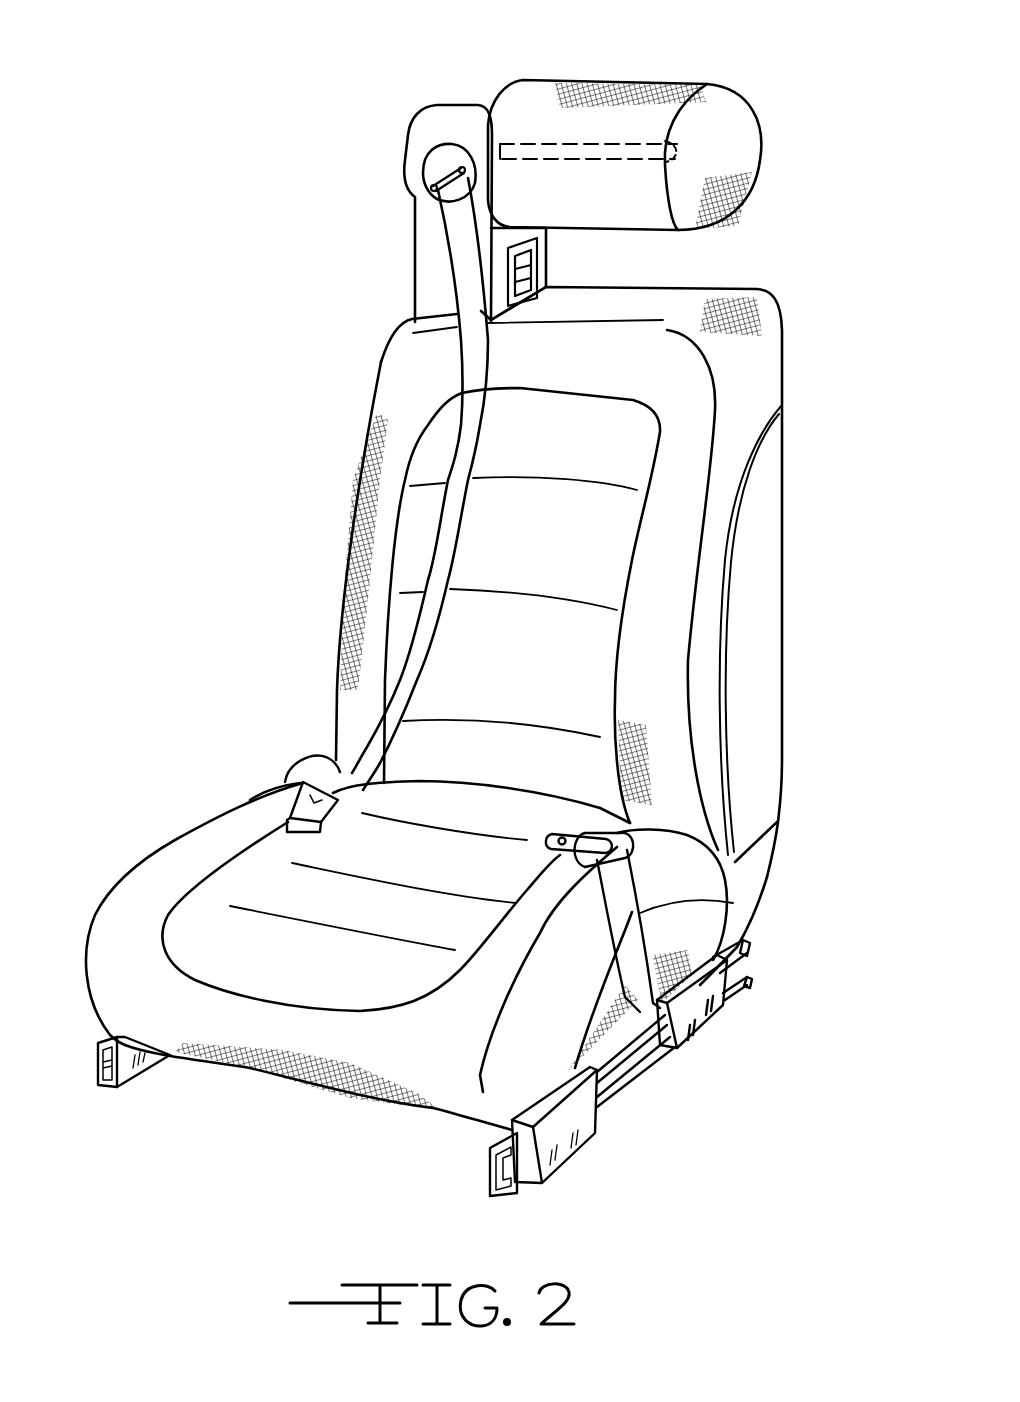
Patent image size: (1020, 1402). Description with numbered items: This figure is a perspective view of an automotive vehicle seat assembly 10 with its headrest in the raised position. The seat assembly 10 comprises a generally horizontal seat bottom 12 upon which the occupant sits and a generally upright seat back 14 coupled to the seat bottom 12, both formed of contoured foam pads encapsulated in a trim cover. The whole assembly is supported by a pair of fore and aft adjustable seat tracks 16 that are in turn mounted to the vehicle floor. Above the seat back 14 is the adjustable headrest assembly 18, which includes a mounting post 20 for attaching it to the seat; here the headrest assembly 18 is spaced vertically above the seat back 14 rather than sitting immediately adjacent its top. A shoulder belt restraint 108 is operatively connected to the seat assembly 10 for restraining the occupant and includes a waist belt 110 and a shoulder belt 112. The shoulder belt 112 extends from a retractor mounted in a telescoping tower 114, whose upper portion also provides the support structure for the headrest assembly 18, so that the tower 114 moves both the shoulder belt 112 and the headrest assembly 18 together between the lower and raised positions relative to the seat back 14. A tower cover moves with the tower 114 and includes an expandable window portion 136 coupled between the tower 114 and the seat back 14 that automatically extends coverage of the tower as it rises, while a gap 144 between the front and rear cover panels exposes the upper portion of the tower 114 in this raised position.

The vehicle seat assembly 10 is at (241, 359).
The seat bottom 12 is at (130, 920).
The seat back 14 is at (767, 350).
The seat tracks 16 is at (147, 1060).
The headrest assembly 18 is at (768, 128).
The mounting post 20 is at (598, 147).
The shoulder belt restraint 108 is at (326, 749).
The waist belt 110 is at (733, 903).
The shoulder belt 112 is at (462, 415).
The telescoping tower 114 is at (413, 137).
The expandable window portion 136 is at (505, 263).
The gap 144 is at (538, 267).